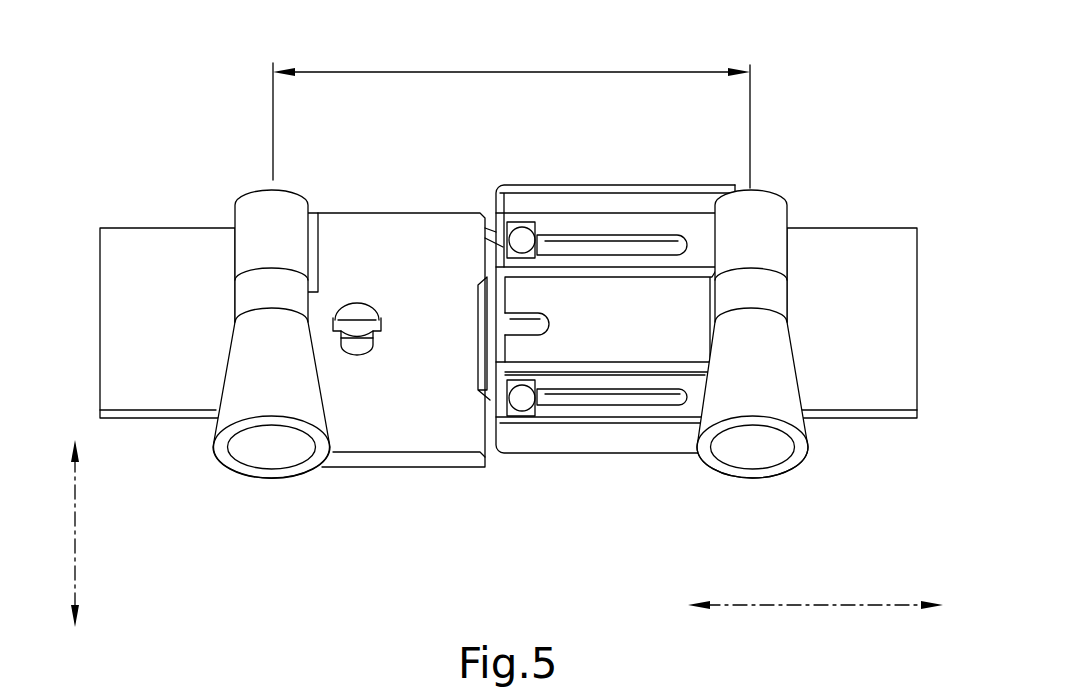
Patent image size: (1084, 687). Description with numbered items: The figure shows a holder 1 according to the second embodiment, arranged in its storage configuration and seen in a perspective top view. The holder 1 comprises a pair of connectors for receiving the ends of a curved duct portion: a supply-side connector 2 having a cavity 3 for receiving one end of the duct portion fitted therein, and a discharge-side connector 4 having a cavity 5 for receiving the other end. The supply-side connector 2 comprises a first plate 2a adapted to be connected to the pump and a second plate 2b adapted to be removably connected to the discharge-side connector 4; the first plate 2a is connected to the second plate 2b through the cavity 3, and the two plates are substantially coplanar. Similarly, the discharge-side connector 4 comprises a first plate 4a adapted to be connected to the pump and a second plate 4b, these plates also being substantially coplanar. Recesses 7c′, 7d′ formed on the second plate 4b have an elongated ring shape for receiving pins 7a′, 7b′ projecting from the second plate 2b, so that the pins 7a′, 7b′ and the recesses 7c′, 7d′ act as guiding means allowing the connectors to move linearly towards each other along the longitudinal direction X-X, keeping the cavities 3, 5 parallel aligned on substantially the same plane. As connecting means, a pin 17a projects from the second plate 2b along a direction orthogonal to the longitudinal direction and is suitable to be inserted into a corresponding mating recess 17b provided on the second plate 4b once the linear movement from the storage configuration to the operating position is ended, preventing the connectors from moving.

The holder 1 is at (882, 41).
The supply-side connector 2 is at (108, 211).
The first plate 2a is at (185, 290).
The second plate 2b is at (416, 420).
The cavity 3 is at (272, 473).
The discharge-side connector 4 is at (882, 207).
The first plate 4a is at (872, 363).
The second plate 4b is at (698, 235).
The cavity 5 is at (757, 479).
The pin 7a′ is at (523, 400).
The pin 7b′ is at (522, 238).
The recess 7c′ is at (670, 403).
The recess 7d′ is at (650, 247).
The pin 17a is at (352, 318).
The mating recess 17b is at (525, 330).